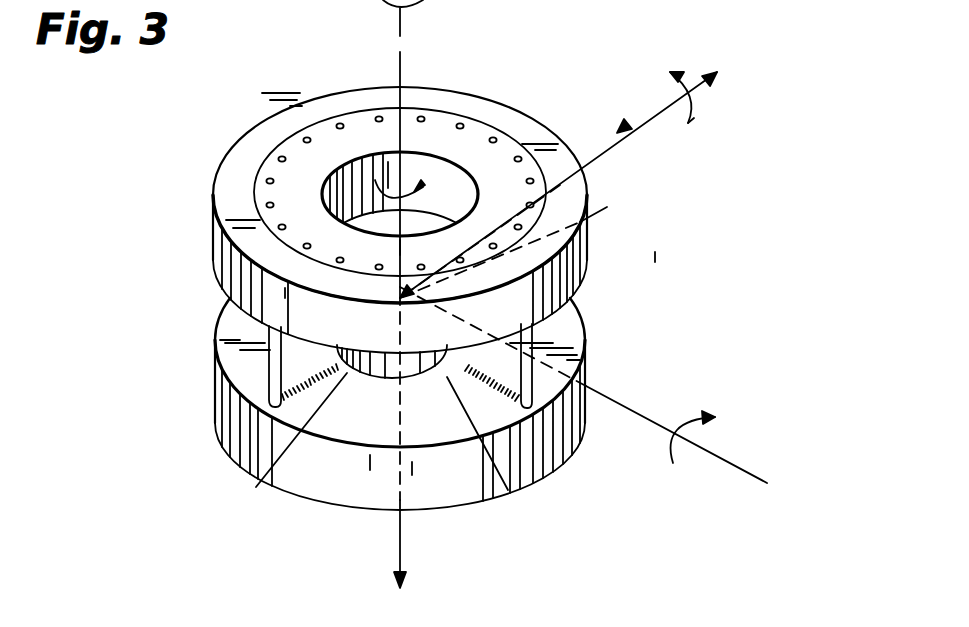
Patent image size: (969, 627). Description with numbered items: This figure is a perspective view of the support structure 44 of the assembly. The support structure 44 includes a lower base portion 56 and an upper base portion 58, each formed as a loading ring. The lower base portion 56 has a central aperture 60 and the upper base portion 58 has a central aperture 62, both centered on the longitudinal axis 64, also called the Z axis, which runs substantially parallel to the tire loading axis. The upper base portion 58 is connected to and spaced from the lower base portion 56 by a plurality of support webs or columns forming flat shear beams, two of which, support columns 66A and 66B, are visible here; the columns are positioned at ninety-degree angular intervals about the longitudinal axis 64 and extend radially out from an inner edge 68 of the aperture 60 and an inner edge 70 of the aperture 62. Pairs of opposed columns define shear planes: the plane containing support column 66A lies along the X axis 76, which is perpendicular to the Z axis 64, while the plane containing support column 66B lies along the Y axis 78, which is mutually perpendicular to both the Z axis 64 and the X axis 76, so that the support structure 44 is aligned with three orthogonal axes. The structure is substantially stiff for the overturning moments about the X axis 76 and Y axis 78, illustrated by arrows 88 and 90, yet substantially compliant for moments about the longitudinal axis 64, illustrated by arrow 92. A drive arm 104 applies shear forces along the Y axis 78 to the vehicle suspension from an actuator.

The support structure 44 is at (625, 130).
The lower base portion 56 is at (585, 411).
The upper base portion 58 is at (532, 120).
The central aperture 60 is at (508, 490).
The central aperture 62 is at (452, 160).
The longitudinal axis 64 is at (405, 58).
The support column 66A is at (295, 358).
The support column 66B is at (533, 338).
The inner edge 68 is at (256, 487).
The inner edge 70 is at (607, 207).
The X axis 76 is at (691, 72).
The Y axis 78 is at (722, 460).
The arrow 88 is at (694, 118).
The arrow 90 is at (672, 456).
The arrow 92 is at (421, 196).
The drive arm 104 is at (361, 18).